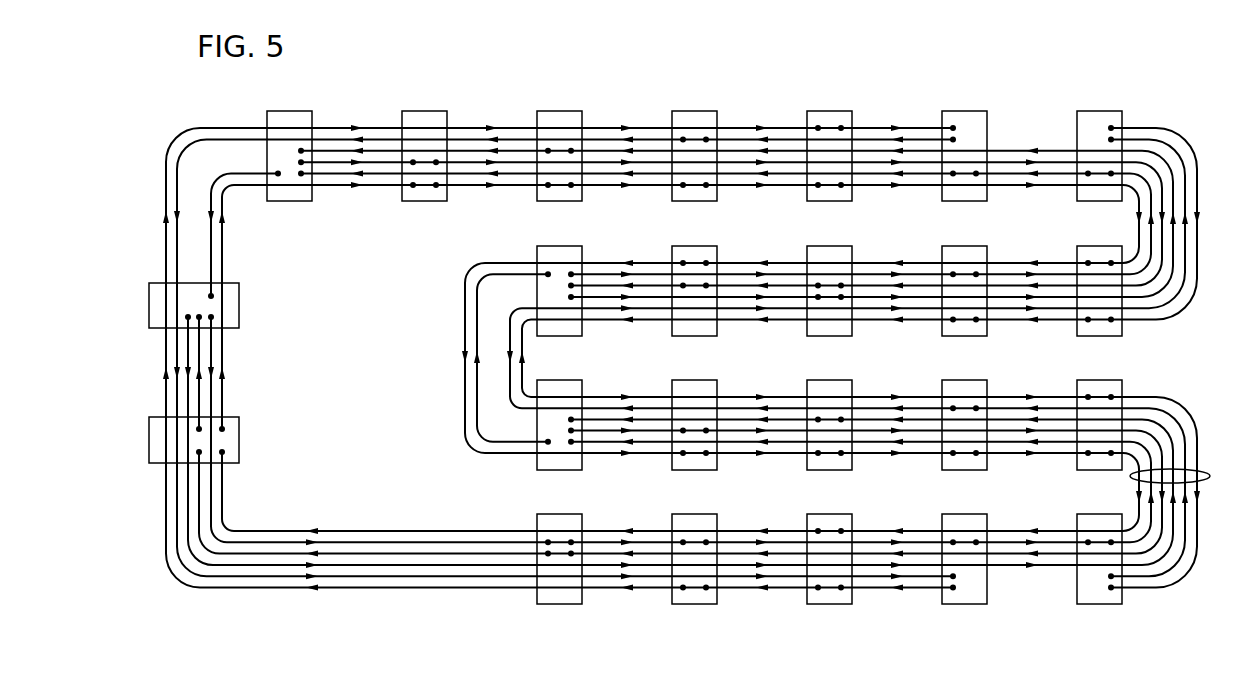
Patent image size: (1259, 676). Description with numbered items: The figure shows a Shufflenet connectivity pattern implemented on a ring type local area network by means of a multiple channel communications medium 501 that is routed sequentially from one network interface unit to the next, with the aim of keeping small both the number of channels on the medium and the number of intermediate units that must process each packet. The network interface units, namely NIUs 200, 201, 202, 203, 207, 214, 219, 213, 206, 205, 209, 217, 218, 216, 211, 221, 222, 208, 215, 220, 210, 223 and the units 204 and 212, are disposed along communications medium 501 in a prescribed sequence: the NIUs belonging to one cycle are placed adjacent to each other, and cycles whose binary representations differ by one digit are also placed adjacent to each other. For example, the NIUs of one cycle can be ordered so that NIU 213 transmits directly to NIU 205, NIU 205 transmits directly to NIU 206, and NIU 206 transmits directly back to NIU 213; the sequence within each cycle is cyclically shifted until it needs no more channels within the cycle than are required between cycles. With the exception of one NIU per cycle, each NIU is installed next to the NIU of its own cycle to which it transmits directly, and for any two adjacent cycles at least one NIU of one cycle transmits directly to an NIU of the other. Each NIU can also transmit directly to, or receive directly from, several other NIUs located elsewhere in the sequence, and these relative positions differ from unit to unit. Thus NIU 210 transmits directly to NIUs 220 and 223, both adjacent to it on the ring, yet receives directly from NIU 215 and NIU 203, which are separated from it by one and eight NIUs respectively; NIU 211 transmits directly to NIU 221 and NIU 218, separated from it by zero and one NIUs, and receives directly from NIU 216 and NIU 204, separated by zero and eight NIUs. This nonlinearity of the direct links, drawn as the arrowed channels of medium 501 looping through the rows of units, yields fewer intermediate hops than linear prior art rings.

The NIU 200 is at (289, 142).
The NIU 201 is at (424, 142).
The NIU 202 is at (559, 142).
The NIU 203 is at (694, 139).
The NIU 204 is at (214, 305).
The NIU 205 is at (829, 278).
The NIU 206 is at (694, 278).
The NIU 207 is at (829, 142).
The NIU 208 is at (559, 546).
The NIU 209 is at (964, 278).
The NIU 210 is at (964, 546).
The NIU 211 is at (829, 412).
The NIU 212 is at (214, 440).
The NIU 213 is at (559, 278).
The NIU 214 is at (964, 142).
The NIU 215 is at (694, 546).
The NIU 216 is at (694, 412).
The NIU 217 is at (1099, 278).
The NIU 218 is at (559, 412).
The NIU 219 is at (1099, 142).
The NIU 220 is at (829, 546).
The NIU 221 is at (964, 412).
The NIU 222 is at (1099, 412).
The NIU 223 is at (1099, 546).
The multiple channel communications medium 501 is at (1208, 474).